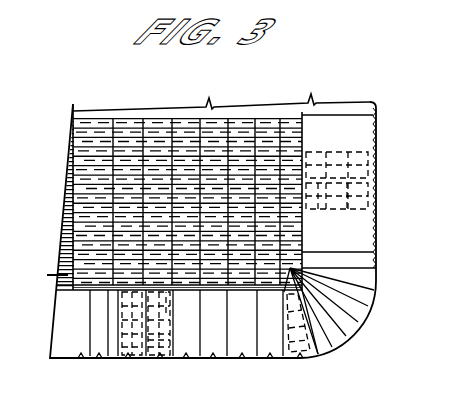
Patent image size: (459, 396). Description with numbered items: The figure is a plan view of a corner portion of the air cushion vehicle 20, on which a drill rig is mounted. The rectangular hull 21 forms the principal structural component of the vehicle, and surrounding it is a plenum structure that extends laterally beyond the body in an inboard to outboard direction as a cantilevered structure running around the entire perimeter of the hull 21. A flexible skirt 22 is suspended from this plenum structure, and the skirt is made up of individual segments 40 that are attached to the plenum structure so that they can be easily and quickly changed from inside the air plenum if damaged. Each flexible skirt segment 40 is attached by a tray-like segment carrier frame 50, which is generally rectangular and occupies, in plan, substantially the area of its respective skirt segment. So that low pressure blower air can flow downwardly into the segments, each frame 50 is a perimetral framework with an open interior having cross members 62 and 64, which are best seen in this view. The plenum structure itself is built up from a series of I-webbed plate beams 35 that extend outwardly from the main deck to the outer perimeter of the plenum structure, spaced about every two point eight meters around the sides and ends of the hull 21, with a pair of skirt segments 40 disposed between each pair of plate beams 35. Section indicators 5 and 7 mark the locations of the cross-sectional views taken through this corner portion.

The air cushion vehicle 20 is at (92, 146).
The hull 21 is at (62, 230).
The flexible skirt 22 is at (336, 128).
The I-webbed plate beams 35 is at (376, 284).
The skirt segments 40 is at (183, 356).
The segment carrier frame 50 is at (150, 357).
The cross member 62 is at (347, 208).
The cross member 64 is at (318, 209).
The section line 5 is at (302, 228).
The section line 7 is at (378, 222).